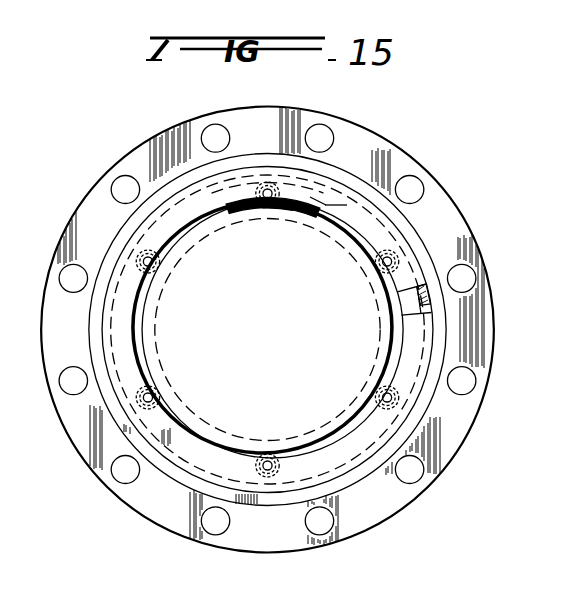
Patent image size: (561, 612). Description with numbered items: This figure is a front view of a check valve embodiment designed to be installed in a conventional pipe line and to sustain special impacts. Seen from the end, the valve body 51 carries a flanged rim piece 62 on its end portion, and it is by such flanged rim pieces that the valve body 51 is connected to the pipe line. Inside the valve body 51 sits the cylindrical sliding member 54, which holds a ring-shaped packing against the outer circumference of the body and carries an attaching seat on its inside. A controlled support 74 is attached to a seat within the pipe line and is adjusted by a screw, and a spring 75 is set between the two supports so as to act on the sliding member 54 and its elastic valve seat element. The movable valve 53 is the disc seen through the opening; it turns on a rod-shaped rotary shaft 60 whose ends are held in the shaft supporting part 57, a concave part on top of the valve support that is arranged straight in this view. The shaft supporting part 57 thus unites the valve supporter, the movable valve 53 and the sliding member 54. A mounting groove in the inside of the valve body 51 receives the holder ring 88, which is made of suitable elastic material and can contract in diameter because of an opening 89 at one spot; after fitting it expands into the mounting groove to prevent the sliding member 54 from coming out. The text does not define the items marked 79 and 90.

The valve body 51 is at (360, 470).
The movable valve 53 is at (290, 337).
The sliding member 54 is at (381, 223).
The shaft supporting part 57 is at (347, 205).
The rotary shaft 60 is at (283, 208).
The flanged rim piece 62 is at (446, 427).
The controlled support 74 is at (158, 264).
The spring 75 is at (151, 276).
The ring 79 is at (360, 243).
The holder ring 88 is at (292, 483).
The opening 89 is at (404, 289).
The strap 90 is at (236, 208).